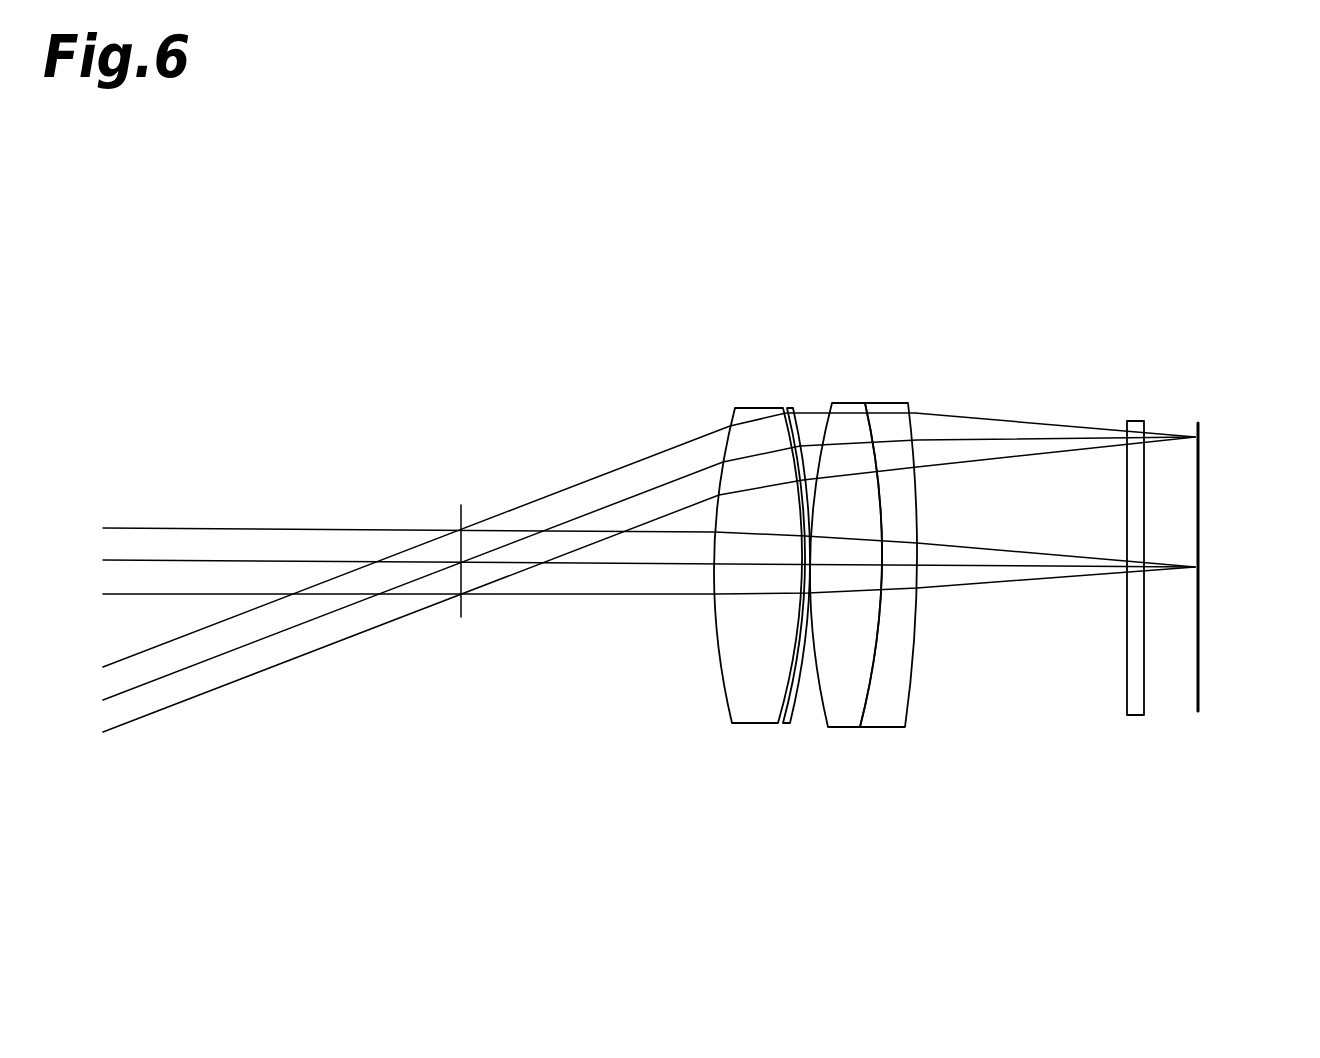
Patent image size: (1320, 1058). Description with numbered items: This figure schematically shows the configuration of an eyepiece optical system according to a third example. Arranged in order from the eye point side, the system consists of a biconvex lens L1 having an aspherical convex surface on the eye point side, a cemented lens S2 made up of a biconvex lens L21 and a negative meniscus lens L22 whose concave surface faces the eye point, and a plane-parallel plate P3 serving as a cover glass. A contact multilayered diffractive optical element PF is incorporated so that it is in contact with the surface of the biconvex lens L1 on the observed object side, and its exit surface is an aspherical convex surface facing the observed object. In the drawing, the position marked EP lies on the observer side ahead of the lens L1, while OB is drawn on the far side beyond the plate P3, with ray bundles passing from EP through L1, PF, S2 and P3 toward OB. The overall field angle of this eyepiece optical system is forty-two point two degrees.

The biconvex lens L1 is at (757, 415).
The contact multilayered diffractive optical element PF is at (793, 713).
The cemented lens S2 is at (887, 452).
The biconvex lens L21 is at (846, 413).
The negative meniscus lens L22 is at (893, 413).
The plane-parallel plate P3 is at (1138, 422).
The object plane OB is at (1202, 450).
The entrance pupil EP is at (463, 580).